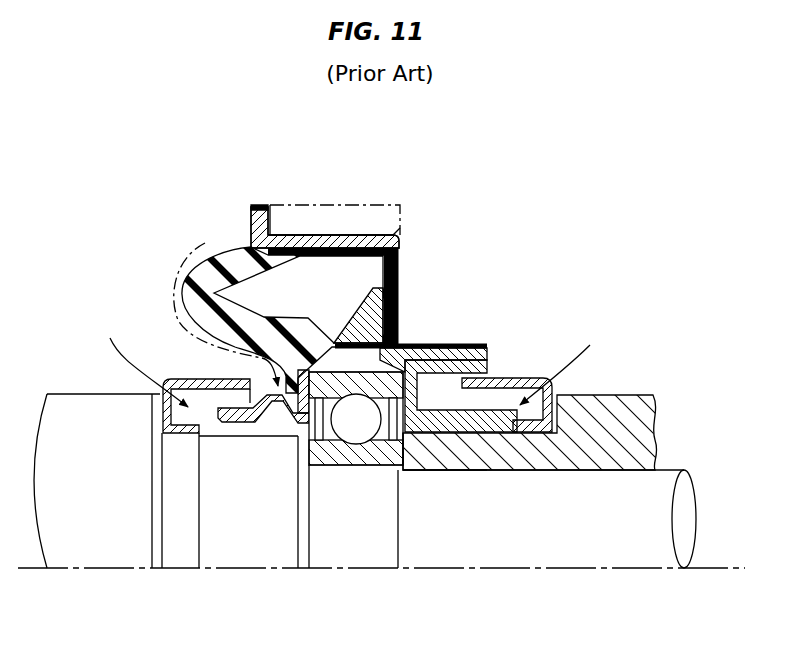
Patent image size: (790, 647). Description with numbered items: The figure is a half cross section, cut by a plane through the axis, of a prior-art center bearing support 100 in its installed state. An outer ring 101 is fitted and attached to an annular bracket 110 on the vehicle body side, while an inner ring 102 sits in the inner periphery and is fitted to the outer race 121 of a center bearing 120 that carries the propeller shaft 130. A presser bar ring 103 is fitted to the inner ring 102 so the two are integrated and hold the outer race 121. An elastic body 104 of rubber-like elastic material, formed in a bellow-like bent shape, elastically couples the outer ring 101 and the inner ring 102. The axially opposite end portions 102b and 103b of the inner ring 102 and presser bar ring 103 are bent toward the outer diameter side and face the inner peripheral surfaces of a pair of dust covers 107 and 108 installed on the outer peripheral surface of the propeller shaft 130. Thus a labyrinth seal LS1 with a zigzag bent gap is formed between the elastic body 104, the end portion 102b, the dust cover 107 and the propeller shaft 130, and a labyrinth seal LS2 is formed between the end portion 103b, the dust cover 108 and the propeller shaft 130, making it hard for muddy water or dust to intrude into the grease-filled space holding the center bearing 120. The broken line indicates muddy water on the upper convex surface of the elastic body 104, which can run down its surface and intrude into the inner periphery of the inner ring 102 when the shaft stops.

The center bearing support 100 is at (228, 238).
The outer ring 101 is at (302, 238).
The annular bracket 110 is at (355, 213).
The elastic body 104 is at (197, 270).
The dust cover 107 is at (203, 380).
The labyrinth seal LS1 is at (128, 364).
The outer race 121 is at (337, 378).
The inner ring 102 is at (390, 342).
The presser bar ring 103 is at (425, 372).
The dust cover 108 is at (505, 377).
The labyrinth seal LS2 is at (569, 366).
The propeller shaft 130 is at (620, 394).
The end portion 102b is at (240, 417).
The end portion 103b is at (496, 466).
The center bearing 120 is at (349, 466).